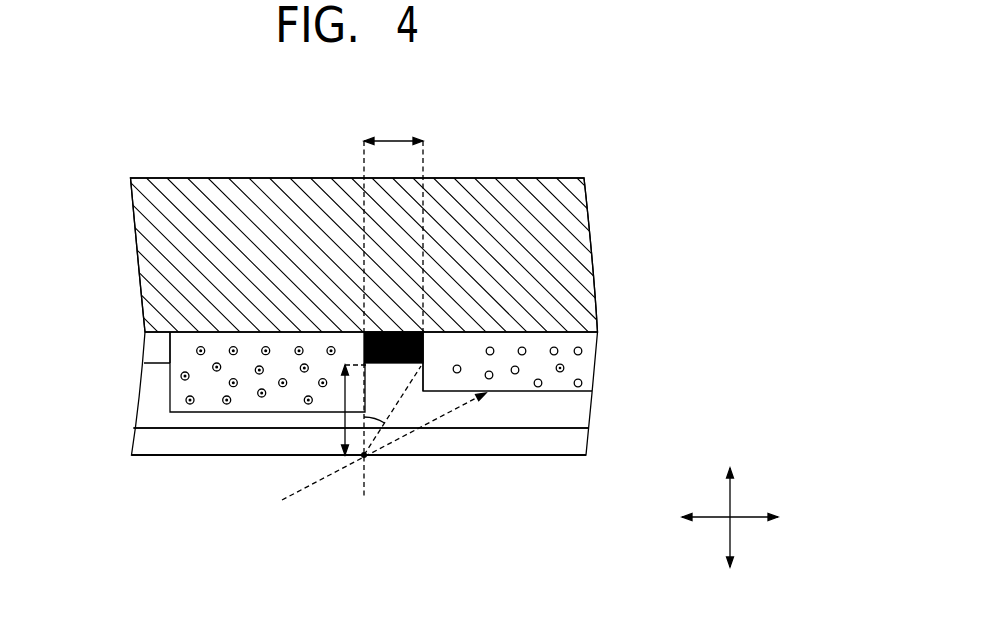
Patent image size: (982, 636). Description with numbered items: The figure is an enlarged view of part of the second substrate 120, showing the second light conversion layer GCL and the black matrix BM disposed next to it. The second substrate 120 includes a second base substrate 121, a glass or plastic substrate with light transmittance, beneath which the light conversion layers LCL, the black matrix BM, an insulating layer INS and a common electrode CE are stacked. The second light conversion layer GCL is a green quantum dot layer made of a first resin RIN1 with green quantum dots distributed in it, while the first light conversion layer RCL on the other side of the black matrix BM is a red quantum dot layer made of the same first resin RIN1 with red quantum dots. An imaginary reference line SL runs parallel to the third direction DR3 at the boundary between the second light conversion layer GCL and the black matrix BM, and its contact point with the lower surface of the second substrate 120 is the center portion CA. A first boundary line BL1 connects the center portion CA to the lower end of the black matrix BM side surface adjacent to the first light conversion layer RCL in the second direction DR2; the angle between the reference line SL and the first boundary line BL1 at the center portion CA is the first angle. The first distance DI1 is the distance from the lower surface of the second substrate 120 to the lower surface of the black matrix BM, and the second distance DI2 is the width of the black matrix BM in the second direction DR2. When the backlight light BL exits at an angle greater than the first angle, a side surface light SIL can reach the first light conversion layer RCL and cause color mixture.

The second substrate 120 is at (591, 132).
The second base substrate 121 is at (578, 250).
The first resin RIN1 is at (188, 340).
The black matrix BM is at (153, 348).
The second light conversion layer GCL is at (212, 403).
The first boundary line BL1 is at (413, 380).
The first light conversion layer RCL is at (505, 384).
The light conversion layers LCL is at (588, 365).
The side surface light SIL is at (406, 426).
The insulating layer INS is at (578, 420).
The common electrode CE is at (572, 447).
The first distance DI1 is at (342, 418).
The second distance DI2 is at (393, 223).
The reference line SL is at (362, 445).
The center portion CA is at (372, 462).
The light BL is at (377, 460).
The third direction DR3 is at (730, 505).
The second direction DR2 is at (751, 518).